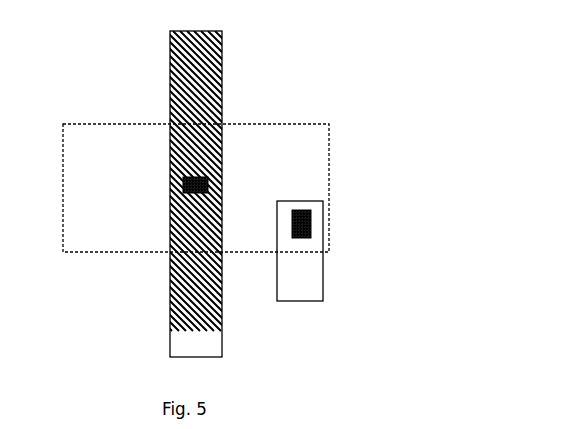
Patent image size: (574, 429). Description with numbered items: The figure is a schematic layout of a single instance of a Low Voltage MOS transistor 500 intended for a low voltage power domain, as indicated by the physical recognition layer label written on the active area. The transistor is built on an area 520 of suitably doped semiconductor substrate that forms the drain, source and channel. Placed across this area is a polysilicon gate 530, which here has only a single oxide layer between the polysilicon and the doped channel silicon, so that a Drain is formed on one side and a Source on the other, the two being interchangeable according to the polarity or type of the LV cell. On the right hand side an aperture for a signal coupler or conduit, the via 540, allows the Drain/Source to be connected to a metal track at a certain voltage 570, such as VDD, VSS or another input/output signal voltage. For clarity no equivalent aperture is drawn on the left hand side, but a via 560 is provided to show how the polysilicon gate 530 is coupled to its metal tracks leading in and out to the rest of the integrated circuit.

The Low Voltage (LV) MOS transistor 500 is at (437, 342).
The area of doped semiconductor substrate 520 is at (205, 167).
The polysilicon gate 530 is at (261, 194).
The via 540 is at (327, 203).
The via 560 is at (171, 164).
The metal track at a certain voltage 570 is at (275, 251).